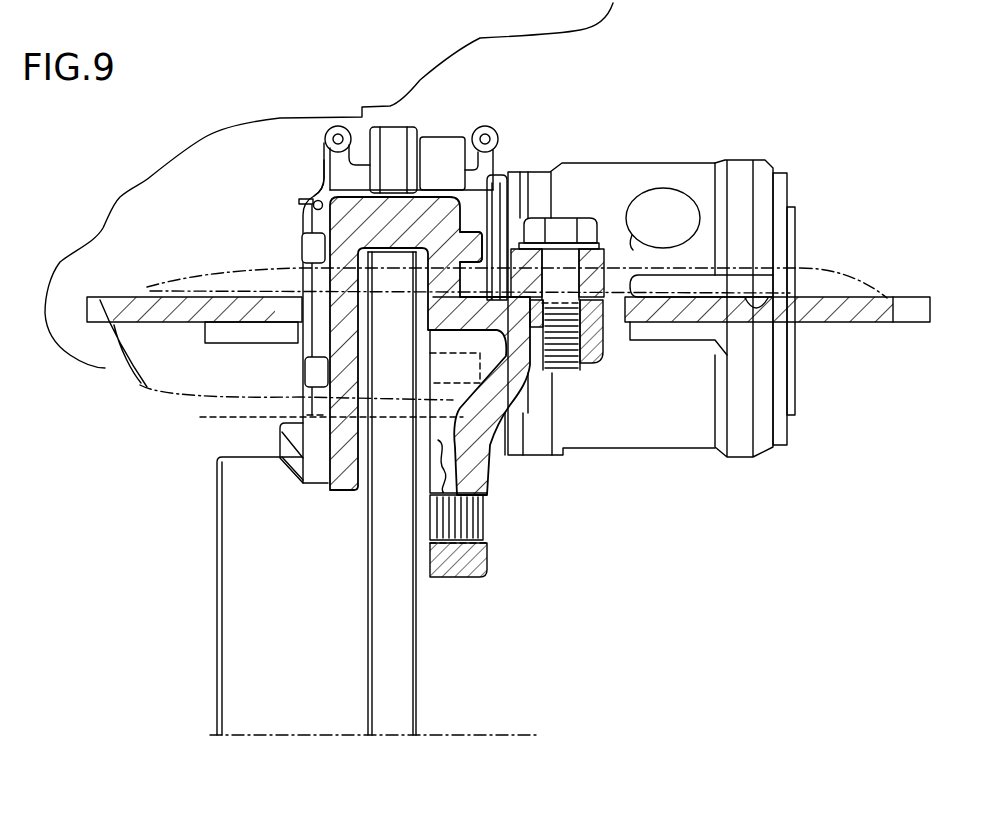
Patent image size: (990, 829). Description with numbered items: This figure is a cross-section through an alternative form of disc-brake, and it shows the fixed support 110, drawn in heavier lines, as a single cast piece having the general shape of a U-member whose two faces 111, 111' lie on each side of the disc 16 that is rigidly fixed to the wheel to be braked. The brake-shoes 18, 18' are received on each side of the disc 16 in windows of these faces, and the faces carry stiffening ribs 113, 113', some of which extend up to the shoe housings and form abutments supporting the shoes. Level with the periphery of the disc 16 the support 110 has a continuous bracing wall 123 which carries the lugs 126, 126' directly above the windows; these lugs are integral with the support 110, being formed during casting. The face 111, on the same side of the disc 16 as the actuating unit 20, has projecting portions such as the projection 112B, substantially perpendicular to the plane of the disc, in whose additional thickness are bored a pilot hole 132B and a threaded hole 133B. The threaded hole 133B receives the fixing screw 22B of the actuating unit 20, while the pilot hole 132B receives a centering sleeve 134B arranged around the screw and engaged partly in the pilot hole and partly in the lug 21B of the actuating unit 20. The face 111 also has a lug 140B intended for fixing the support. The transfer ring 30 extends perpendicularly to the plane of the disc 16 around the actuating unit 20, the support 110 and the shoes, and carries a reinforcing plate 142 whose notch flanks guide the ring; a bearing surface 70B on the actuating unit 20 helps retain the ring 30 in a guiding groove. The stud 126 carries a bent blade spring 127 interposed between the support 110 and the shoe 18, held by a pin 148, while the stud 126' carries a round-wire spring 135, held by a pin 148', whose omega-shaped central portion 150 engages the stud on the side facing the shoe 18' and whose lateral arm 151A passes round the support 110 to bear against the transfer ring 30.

The disc 16 is at (420, 674).
The brake-shoe 18 is at (535, 214).
The brake-shoe 18' is at (273, 313).
The actuating unit 20 is at (745, 160).
The lug 21B is at (598, 294).
The screw 22B is at (563, 225).
The transfer ring 30 is at (905, 297).
The bearing surface 70B is at (763, 297).
The fixed support 110 is at (322, 488).
The face 111 is at (452, 359).
The face 111' is at (264, 310).
The projecting portion 112B is at (520, 358).
The stiffening rib 113 is at (430, 278).
The stiffening rib 113' is at (266, 339).
The bracing wall 123 is at (393, 134).
The lug 126 is at (514, 146).
The lug 126' is at (329, 115).
The spring 127 is at (444, 140).
The pilot hole 132B is at (603, 318).
The threaded hole 133B is at (578, 366).
The centering sleeve 134B is at (585, 303).
The spring 135 is at (312, 179).
The lug 140B is at (488, 560).
The reinforcing plate 142 is at (213, 338).
The pin 148 is at (497, 112).
The pin 148' is at (355, 105).
The central portion 150 is at (362, 194).
The lateral arm 151A is at (313, 204).